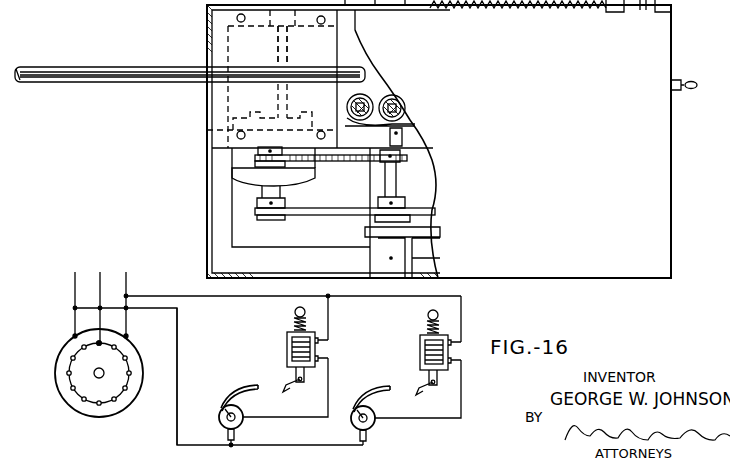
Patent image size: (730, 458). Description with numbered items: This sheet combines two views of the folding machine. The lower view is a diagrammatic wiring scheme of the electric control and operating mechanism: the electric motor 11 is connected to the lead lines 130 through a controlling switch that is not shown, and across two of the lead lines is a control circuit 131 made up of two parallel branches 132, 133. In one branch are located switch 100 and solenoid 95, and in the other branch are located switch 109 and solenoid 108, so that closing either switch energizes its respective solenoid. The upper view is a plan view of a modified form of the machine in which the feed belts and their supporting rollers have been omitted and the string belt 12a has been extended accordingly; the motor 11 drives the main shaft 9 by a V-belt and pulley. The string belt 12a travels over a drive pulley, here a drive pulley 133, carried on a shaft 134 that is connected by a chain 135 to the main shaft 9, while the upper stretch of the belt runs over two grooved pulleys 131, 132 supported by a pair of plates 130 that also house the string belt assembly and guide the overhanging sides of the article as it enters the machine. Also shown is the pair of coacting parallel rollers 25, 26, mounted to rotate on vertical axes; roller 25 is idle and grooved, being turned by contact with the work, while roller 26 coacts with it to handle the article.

In FIG. 18, the main driving shaft 9 is at (392, 187).
In FIG. 16, the electric motor 11 is at (137, 391).
In FIG. 18, the string belt 12a is at (151, 70).
In FIG. 18, the roller 25 is at (348, 108).
In FIG. 18, the roller 26 is at (408, 104).
In FIG. 16, the solenoid 95 is at (288, 341).
In FIG. 16, the switch 100 is at (219, 413).
In FIG. 16, the solenoid 108 is at (420, 344).
In FIG. 16, the switch 109 is at (385, 402).
In FIG. 18, the lead lines 130 is at (85, 70).
In FIG. 16, the lead lines 130 is at (100, 293).
In FIG. 16, the control circuit 131 is at (204, 376).
In FIG. 16, the parallel branch 132 is at (324, 396).
In FIG. 16, the parallel branch 133 is at (461, 400).
In FIG. 18, the shaft 134 is at (282, 45).
In FIG. 18, the chain 135 is at (345, 163).